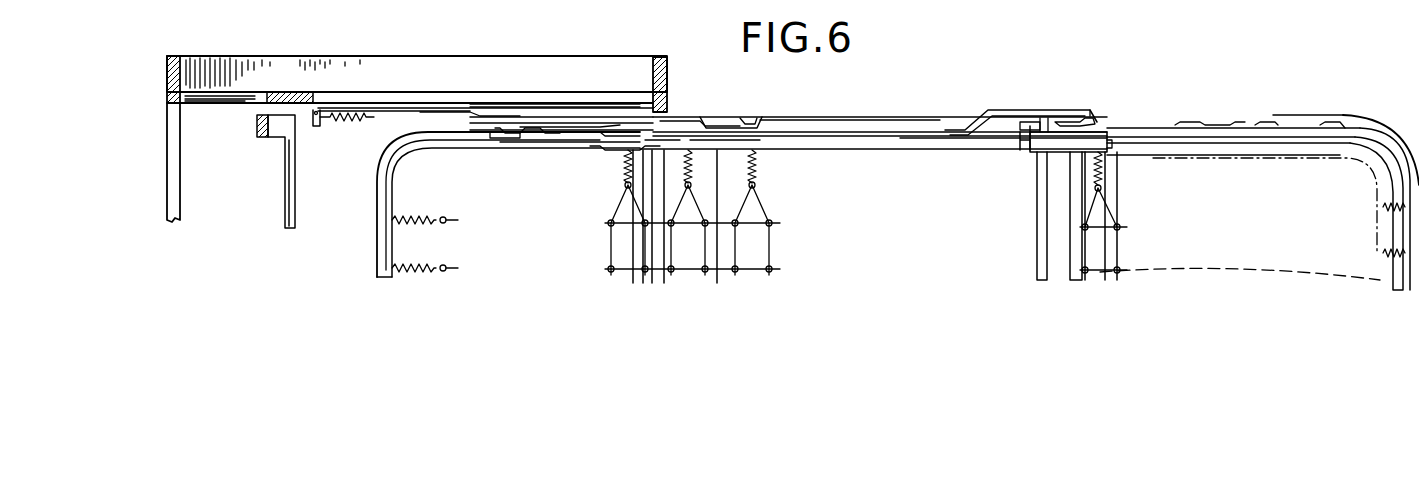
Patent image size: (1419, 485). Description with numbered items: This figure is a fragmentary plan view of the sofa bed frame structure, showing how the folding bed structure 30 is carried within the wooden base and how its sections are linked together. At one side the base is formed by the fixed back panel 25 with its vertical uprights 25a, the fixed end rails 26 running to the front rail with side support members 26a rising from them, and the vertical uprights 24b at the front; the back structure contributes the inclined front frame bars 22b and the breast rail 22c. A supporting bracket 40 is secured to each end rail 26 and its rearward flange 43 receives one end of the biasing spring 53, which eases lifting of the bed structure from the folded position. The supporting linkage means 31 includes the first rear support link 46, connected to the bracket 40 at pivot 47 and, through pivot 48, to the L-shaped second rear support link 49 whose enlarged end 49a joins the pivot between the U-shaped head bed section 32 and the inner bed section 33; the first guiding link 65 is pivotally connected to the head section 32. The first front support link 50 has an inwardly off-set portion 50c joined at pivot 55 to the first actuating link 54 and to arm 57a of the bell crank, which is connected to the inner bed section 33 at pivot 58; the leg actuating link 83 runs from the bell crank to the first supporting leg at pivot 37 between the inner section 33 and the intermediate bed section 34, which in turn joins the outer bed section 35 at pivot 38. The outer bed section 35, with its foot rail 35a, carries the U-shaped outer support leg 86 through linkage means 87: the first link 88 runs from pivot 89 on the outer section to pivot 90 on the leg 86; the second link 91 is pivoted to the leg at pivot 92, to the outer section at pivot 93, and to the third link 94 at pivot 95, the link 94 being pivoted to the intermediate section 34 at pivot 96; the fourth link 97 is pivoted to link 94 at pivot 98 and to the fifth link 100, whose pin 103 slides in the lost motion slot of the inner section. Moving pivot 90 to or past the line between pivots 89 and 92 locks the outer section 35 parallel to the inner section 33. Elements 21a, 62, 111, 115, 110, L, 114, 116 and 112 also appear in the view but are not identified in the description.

The top beam 21a is at (490, 62).
The vertical uprights 25a is at (166, 77).
The fixed back panel 25 is at (167, 146).
The fixed end rails 26 is at (378, 92).
The side support members 26a is at (290, 92).
The vertical uprights 24b is at (655, 60).
The front frame bars 22b is at (256, 132).
The breast rail 22c is at (285, 197).
The rearward flange 43 is at (318, 128).
The biasing spring 53 is at (350, 120).
The supporting bracket 40 is at (398, 111).
The pivot 47 is at (432, 113).
The first rear support link 46 is at (485, 108).
The supporting linkage means 31 is at (594, 93).
The first front support link 50 is at (580, 127).
The second rear support link 49 is at (495, 128).
The pivot 48 is at (510, 139).
The first guiding link 65 is at (538, 143).
The enlarged end 49a is at (560, 136).
The stop 62 is at (610, 148).
The head bed section 32 is at (380, 245).
The springs 111 is at (418, 216).
The inner bed section 33 is at (892, 150).
The first actuating link 54 is at (662, 149).
The inwardly off-set portion 50c is at (725, 149).
The pivot 55 is at (672, 120).
The bell crank arm 57a is at (706, 118).
The pivot 58 is at (748, 118).
The leg actuating link 83 is at (838, 119).
The folding bed structure 30 is at (891, 104).
The pin 103 is at (953, 150).
The fifth link 100 is at (985, 112).
The fourth link 97 is at (1032, 121).
The pivot 96 is at (1043, 118).
The pivot 98 is at (1080, 118).
The pivot 37 is at (1026, 150).
The intermediate bed section 34 is at (1078, 136).
The hanger bars 115 is at (1070, 178).
The springs 110 is at (758, 178).
The load L is at (770, 246).
The hanger 114 is at (1120, 245).
The pivot 38 is at (1112, 150).
The third link 94 is at (1160, 128).
The linkage means 87 is at (1191, 110).
The pivot 95 is at (1192, 124).
The second link 91 is at (1262, 124).
The pivot 90 is at (1320, 115).
The first link 88 is at (1332, 125).
The outer support leg 86 is at (1368, 130).
The pivot 93 is at (1222, 150).
The pivot 92 is at (1270, 132).
The outer bed section 35 is at (1315, 158).
The pivot 89 is at (1350, 160).
The springs 116 is at (1383, 207).
The foot rail 35a is at (1415, 228).
The cable 112 is at (1258, 240).